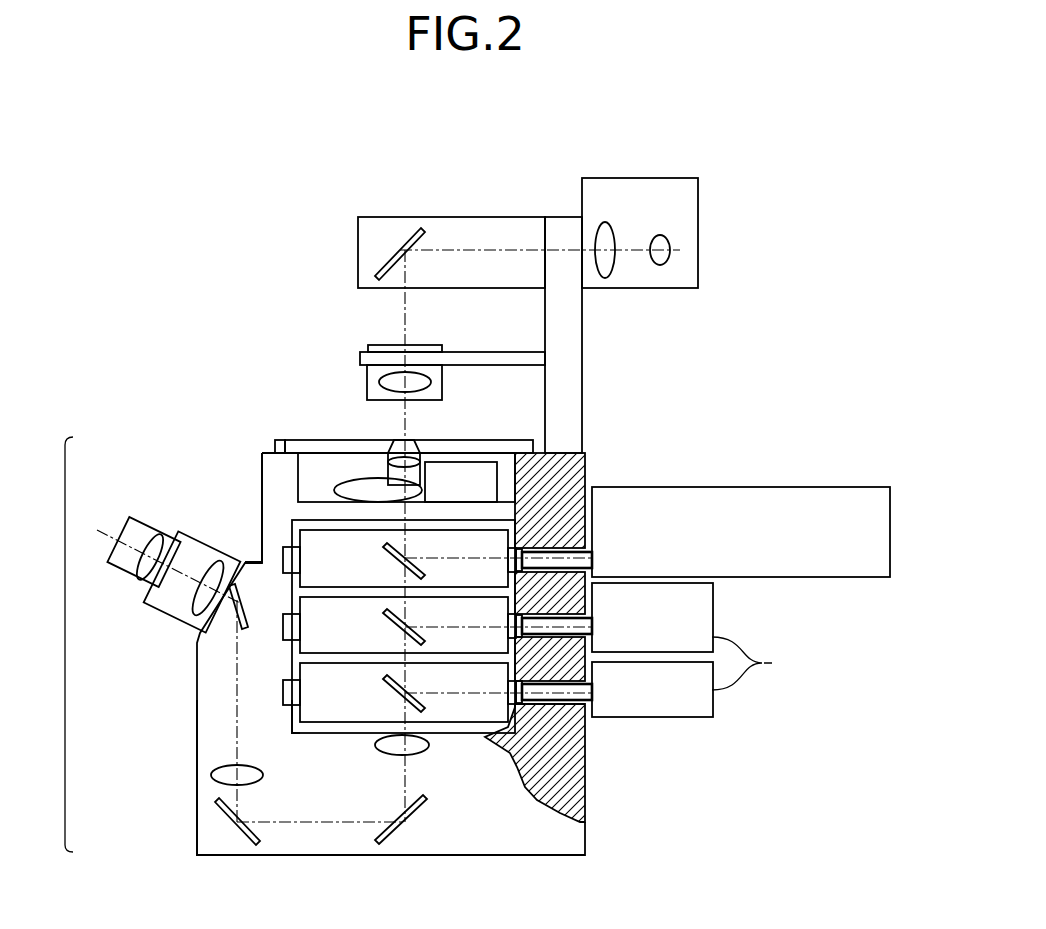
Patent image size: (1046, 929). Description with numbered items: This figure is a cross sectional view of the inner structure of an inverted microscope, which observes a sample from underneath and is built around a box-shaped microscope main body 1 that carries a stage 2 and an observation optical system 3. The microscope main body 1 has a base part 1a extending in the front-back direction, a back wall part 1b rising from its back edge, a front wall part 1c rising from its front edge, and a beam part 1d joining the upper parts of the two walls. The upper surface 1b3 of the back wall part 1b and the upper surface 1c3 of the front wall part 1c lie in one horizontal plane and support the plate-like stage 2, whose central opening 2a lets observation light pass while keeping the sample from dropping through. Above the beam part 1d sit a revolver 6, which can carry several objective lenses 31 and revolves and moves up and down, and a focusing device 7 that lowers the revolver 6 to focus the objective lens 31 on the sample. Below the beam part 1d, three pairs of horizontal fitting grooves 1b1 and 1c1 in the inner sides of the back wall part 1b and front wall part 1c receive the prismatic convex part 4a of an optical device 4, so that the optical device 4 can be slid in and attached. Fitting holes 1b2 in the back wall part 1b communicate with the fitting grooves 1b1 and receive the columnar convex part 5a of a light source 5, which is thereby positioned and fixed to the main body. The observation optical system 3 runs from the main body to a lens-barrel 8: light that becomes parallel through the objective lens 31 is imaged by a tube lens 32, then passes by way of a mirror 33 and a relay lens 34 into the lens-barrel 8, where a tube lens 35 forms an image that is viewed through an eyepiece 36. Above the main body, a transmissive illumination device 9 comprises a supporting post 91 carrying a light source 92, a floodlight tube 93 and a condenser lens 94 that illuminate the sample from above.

The microscope main body 1 is at (538, 866).
The base part 1a is at (470, 830).
The back wall part 1b is at (593, 457).
The fitting groove 1b1 is at (567, 772).
The fitting hole 1b2 is at (560, 710).
The upper surface of the back wall part 1b3 is at (560, 453).
The front wall part 1c is at (268, 472).
The fitting groove 1c1 is at (293, 710).
The upper surface of the front wall part 1c3 is at (277, 440).
The beam part 1d is at (347, 517).
The stage 2 is at (305, 438).
The opening 2a is at (413, 442).
The observation optical system 3 is at (56, 644).
The optical device 4 is at (560, 548).
The convex part 4a is at (513, 563).
The light source 5 is at (822, 500).
The convex part 5a is at (556, 620).
The revolver 6 is at (360, 483).
The focusing device 7 is at (480, 455).
The lens-barrel 8 is at (207, 545).
The transmissive illumination device 9 is at (574, 278).
The objective lens 31 is at (395, 440).
The tube lens 32 is at (420, 748).
The mirror 33 is at (237, 630).
The relay lens 34 is at (212, 778).
The tube lens 35 is at (190, 623).
The eyepiece 36 is at (150, 570).
The supporting post 91 is at (575, 325).
The light source 92 is at (687, 208).
The floodlight tube 93 is at (452, 225).
The condenser lens 94 is at (377, 380).